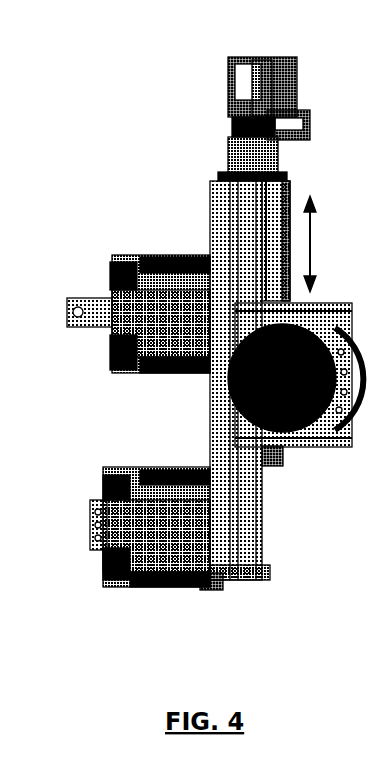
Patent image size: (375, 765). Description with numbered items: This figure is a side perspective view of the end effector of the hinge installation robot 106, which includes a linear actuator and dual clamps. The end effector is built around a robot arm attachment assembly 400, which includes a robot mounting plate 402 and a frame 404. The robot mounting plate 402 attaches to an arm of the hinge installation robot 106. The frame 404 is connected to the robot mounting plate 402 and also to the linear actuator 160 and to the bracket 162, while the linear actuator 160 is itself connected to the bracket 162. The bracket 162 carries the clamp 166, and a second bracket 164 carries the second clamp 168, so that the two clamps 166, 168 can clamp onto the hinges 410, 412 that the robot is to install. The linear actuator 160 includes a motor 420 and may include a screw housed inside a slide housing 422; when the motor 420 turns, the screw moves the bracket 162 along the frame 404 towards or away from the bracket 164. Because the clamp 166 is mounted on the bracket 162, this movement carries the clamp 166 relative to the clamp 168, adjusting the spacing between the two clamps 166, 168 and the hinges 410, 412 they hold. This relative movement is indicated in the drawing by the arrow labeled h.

The hinge installation robot 106 is at (118, 48).
The motor 420 is at (229, 76).
The linear actuator 160 is at (222, 160).
The slide housing 422 is at (286, 178).
The frame 404 is at (215, 201).
The clamp 166 is at (121, 262).
The hinge 410 is at (75, 300).
The bracket 162 is at (135, 320).
The bracket 164 is at (142, 488).
The hinge 412 is at (95, 505).
The clamp 168 is at (121, 578).
The robot arm attachment assembly 400 is at (323, 443).
The robot mounting plate 402 is at (288, 430).